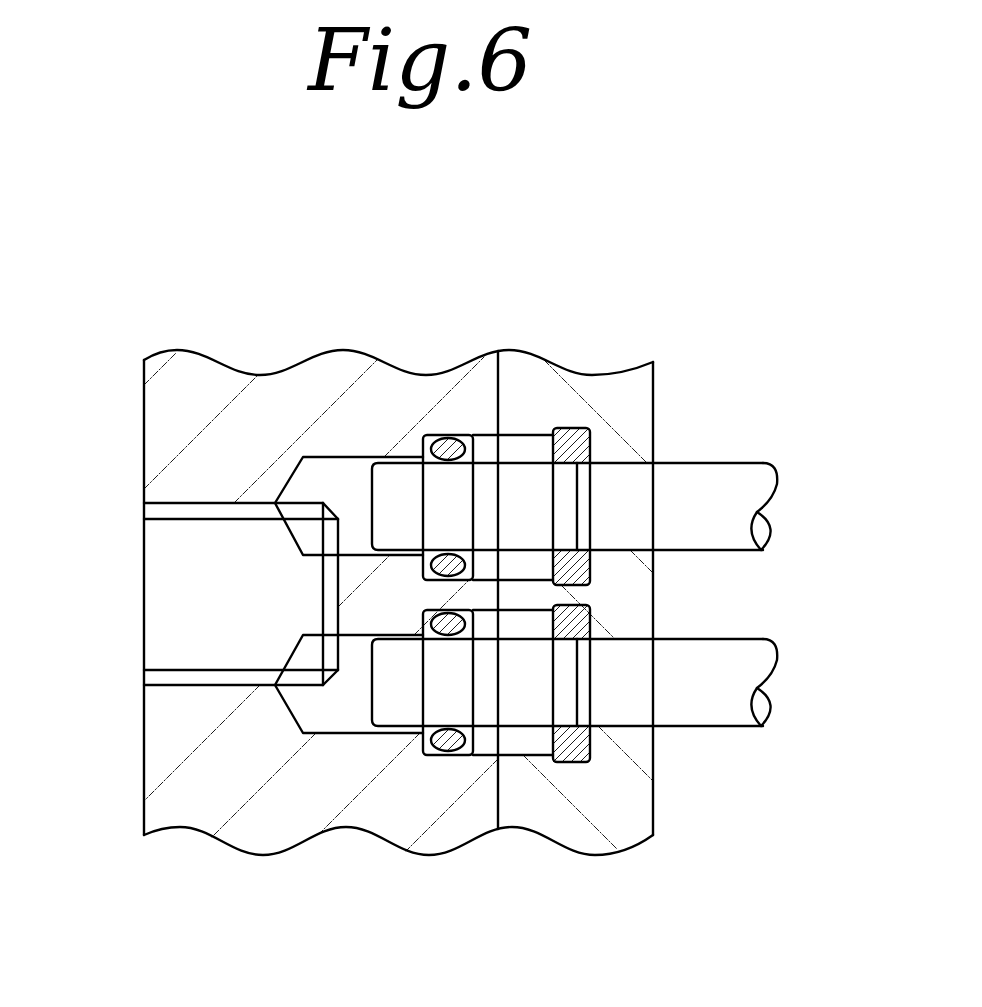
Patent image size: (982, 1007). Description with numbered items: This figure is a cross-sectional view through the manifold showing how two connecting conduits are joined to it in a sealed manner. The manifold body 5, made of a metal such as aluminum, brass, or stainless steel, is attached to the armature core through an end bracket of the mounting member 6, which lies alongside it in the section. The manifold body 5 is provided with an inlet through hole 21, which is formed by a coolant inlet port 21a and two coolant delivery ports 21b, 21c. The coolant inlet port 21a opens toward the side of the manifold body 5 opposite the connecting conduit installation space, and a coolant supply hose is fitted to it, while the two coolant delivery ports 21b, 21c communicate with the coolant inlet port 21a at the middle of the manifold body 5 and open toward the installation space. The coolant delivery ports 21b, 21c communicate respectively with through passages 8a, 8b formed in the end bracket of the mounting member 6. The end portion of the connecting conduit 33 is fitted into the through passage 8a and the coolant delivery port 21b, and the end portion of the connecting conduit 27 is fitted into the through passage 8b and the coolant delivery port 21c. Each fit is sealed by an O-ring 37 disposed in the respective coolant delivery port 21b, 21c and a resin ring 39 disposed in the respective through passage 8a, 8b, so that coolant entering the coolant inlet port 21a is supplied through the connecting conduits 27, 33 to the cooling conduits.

The manifold body 5 is at (128, 406).
The mounting member 6 is at (645, 838).
The inlet through hole 21 is at (183, 520).
The coolant inlet port 21a is at (177, 668).
The coolant delivery port 21b is at (397, 464).
The coolant delivery port 21c is at (397, 726).
The connecting conduit 27 is at (753, 663).
The connecting conduit 33 is at (750, 488).
The O-ring 37 is at (448, 438).
The resin ring 39 is at (570, 450).
The through passage 8a is at (617, 468).
The through passage 8b is at (622, 723).